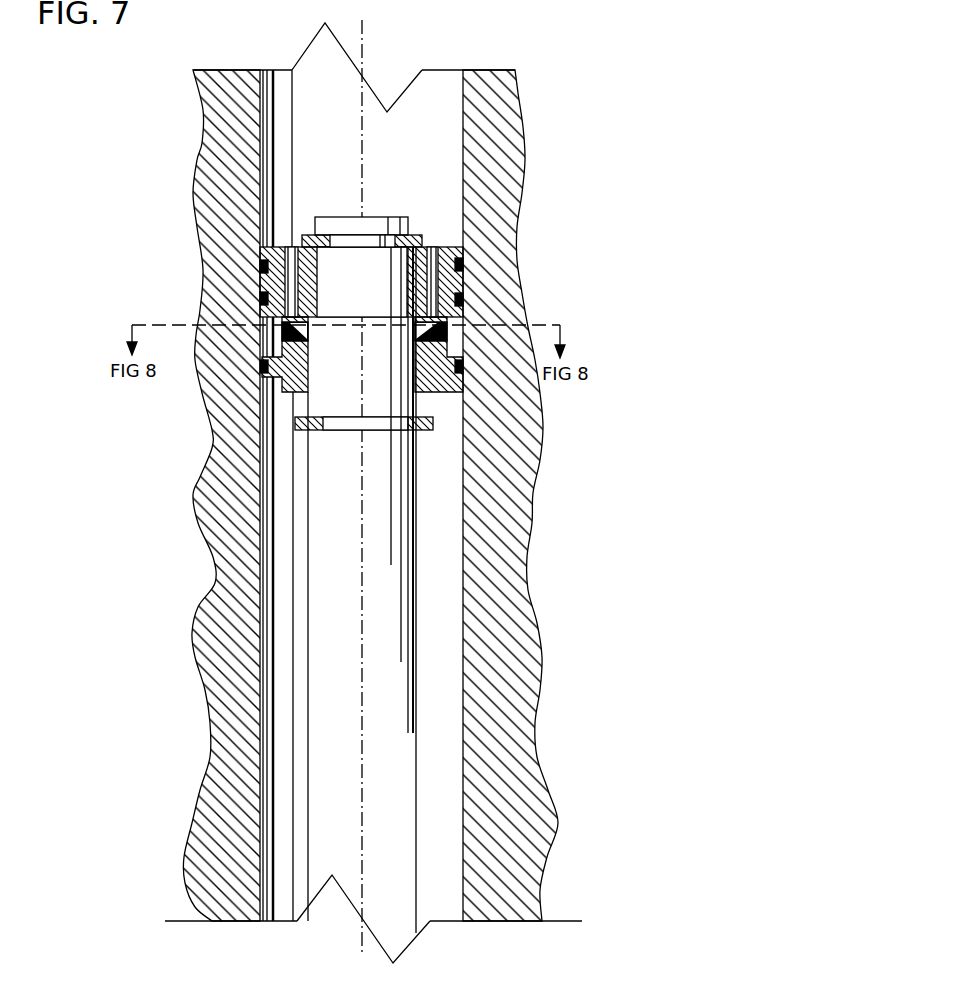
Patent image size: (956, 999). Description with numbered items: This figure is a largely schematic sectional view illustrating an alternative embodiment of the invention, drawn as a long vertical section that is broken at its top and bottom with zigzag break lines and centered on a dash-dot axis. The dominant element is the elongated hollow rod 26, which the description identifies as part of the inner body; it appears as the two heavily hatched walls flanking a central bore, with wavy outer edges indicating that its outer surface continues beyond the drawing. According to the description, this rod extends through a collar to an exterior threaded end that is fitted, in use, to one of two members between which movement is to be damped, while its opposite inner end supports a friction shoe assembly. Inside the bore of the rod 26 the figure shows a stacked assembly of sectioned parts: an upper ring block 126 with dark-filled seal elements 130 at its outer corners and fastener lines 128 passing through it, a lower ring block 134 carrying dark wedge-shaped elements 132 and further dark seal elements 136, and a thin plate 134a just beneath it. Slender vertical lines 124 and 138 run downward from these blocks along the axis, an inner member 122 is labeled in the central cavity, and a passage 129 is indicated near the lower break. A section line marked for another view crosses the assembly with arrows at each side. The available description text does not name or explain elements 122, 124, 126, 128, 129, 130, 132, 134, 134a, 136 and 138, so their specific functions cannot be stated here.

The elongated hollow rod 26 is at (512, 197).
The rod 122 is at (356, 556).
The tube 124 is at (415, 247).
The upper ring block 126 is at (455, 249).
The bolts 128 is at (290, 250).
The bore passage 129 is at (448, 907).
The upper O-ring seals 130 is at (263, 298).
The seal wedges 132 is at (310, 337).
The lower ring block 134 is at (462, 393).
The flange plate 134a is at (270, 393).
The lower O-ring seals 136 is at (262, 372).
The guide rod 138 is at (300, 430).